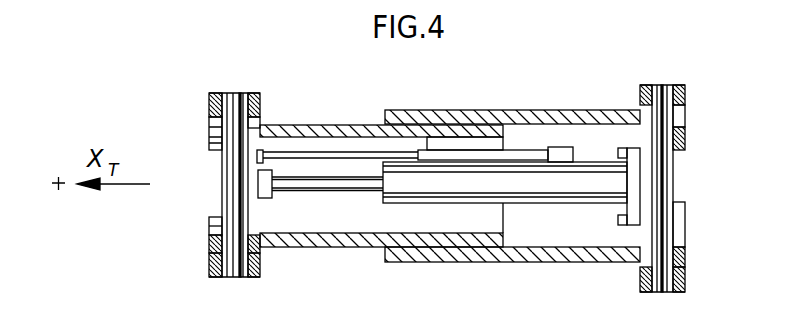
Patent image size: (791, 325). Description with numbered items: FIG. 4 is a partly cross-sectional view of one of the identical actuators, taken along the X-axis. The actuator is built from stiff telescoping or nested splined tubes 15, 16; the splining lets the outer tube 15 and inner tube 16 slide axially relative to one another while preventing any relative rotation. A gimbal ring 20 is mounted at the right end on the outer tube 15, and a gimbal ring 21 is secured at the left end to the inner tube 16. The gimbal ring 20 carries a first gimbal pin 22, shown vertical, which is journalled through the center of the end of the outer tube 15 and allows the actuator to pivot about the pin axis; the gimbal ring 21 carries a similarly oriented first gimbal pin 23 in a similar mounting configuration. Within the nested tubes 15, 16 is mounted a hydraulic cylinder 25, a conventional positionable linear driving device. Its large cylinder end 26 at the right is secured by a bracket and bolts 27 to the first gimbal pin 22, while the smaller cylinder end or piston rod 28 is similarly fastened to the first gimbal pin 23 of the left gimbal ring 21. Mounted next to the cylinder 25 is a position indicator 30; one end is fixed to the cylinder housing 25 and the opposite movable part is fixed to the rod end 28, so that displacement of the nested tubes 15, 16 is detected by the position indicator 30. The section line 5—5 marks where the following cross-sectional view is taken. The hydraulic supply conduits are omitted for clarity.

The section line 5— 5 is at (458, 105).
The outer splined tube 15 is at (538, 112).
The inner splined tube 16 is at (327, 125).
The gimbal ring 20 is at (685, 90).
The gimbal ring 21 is at (210, 100).
The first gimbal pin 22 is at (662, 190).
The first gimbal pin 23 is at (233, 172).
The hydraulic cylinder 25 is at (525, 190).
The large cylinder end 26 is at (618, 196).
The bracket and bolts 27 is at (655, 150).
The piston rod 28 is at (298, 190).
The position indicator 30 is at (436, 157).